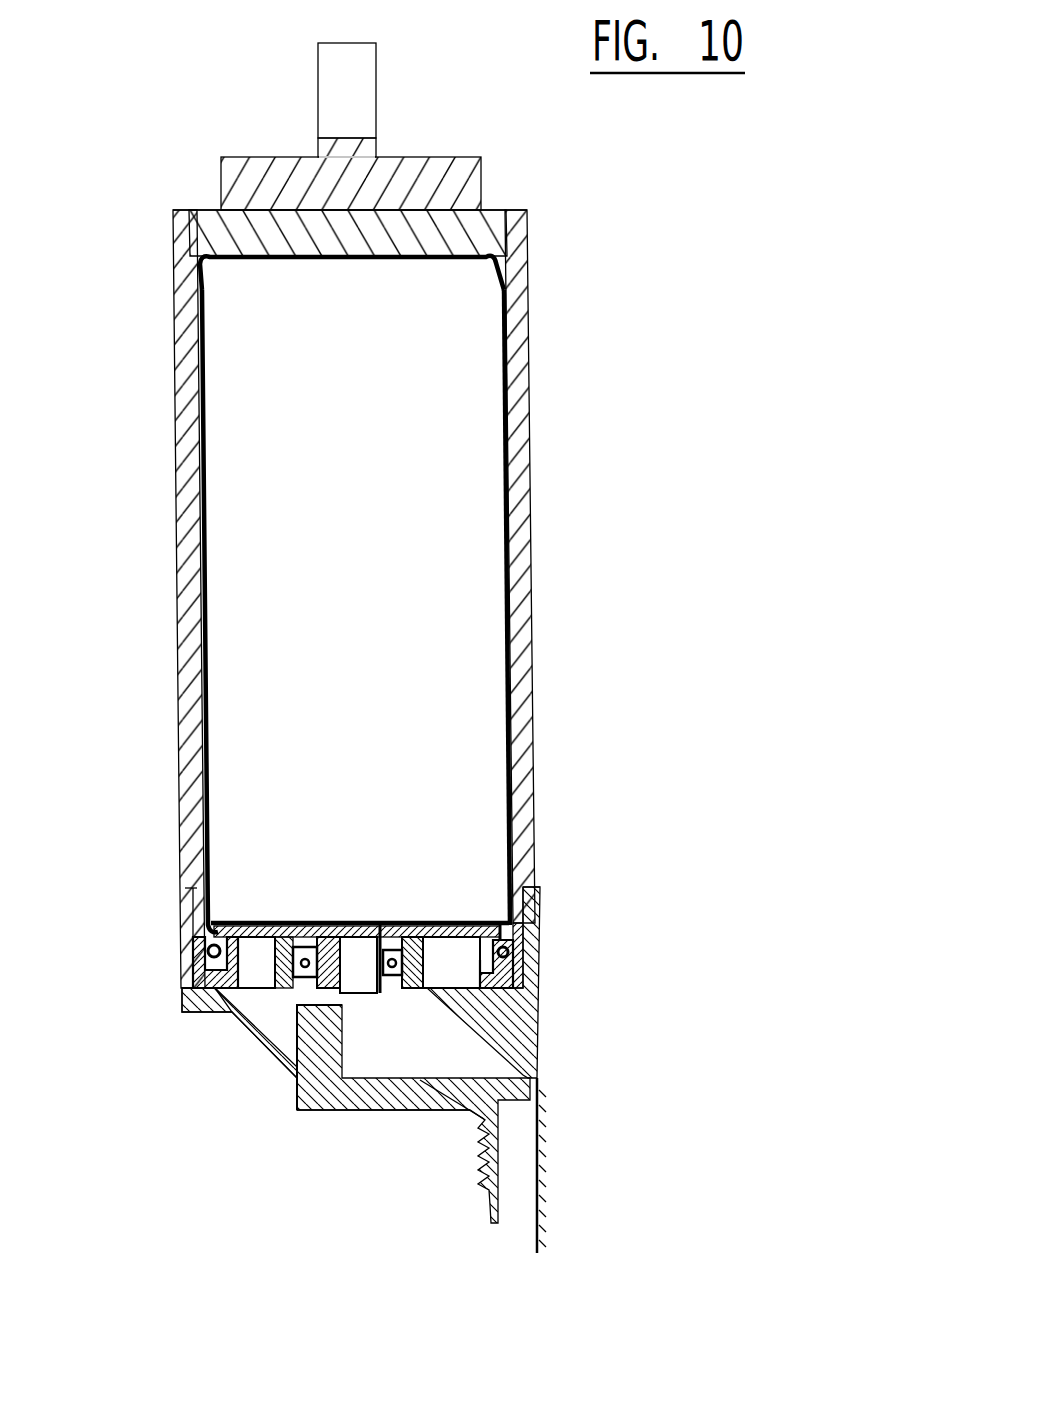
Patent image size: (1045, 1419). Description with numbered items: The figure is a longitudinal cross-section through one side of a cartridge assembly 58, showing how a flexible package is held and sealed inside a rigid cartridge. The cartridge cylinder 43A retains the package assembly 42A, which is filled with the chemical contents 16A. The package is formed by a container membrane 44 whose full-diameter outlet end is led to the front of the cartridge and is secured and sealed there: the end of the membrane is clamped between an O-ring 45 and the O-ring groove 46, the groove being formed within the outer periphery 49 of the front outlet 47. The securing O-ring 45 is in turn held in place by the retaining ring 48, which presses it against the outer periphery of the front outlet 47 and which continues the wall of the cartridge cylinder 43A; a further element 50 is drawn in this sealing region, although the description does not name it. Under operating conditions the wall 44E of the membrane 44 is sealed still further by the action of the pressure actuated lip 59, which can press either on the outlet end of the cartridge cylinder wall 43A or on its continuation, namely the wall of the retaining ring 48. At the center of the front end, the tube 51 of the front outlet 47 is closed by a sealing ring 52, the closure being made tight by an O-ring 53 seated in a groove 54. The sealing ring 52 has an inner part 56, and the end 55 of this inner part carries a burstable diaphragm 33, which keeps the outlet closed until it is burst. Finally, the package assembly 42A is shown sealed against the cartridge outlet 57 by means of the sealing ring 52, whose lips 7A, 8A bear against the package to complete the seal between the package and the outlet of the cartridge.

The container membrane 44 is at (506, 398).
The chemical contents 16A is at (377, 486).
The package assembly 42A is at (195, 568).
The cartridge cylinder 43A is at (195, 767).
The wall of the membrane 44E is at (498, 906).
The O-ring 45 is at (517, 948).
The O-ring groove 46 is at (527, 960).
The front outlet 47 is at (185, 898).
The retaining ring 48 is at (223, 1013).
The outer periphery 49 is at (195, 968).
The seal 50 is at (207, 943).
The tube 51 is at (403, 920).
The sealing ring 52 is at (296, 1010).
The O-ring 53 is at (404, 990).
The groove 54 is at (384, 1000).
The end of the inner part 55 is at (382, 917).
The inner part 56 is at (313, 1110).
The cartridge outlet 57 is at (268, 1038).
The cartridge assembly 58 is at (175, 1094).
The pressure actuated lip 59 is at (535, 922).
The lip 8A is at (262, 918).
The lip 7A is at (292, 918).
The burstable diaphragm 33 is at (343, 915).